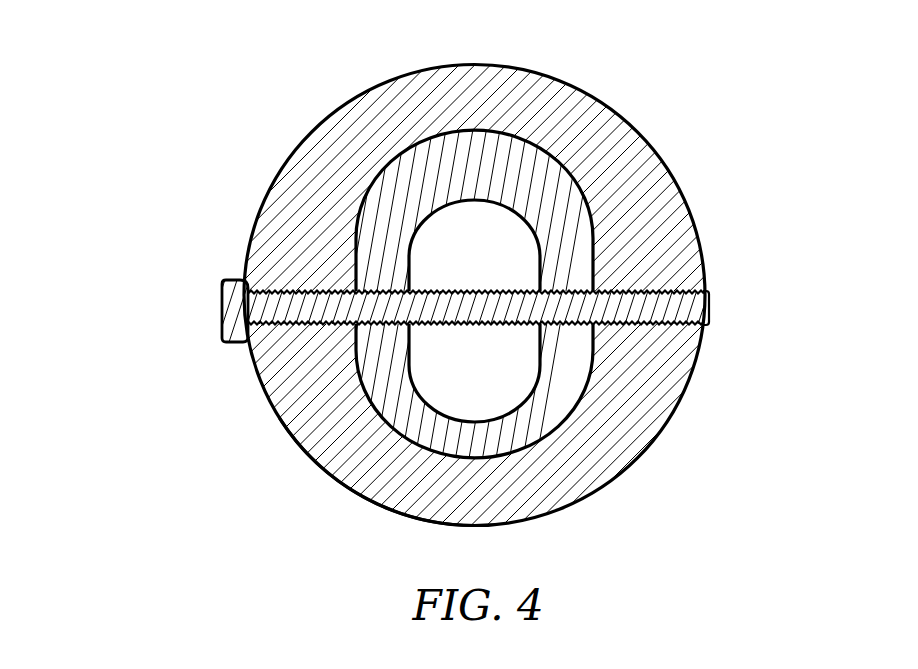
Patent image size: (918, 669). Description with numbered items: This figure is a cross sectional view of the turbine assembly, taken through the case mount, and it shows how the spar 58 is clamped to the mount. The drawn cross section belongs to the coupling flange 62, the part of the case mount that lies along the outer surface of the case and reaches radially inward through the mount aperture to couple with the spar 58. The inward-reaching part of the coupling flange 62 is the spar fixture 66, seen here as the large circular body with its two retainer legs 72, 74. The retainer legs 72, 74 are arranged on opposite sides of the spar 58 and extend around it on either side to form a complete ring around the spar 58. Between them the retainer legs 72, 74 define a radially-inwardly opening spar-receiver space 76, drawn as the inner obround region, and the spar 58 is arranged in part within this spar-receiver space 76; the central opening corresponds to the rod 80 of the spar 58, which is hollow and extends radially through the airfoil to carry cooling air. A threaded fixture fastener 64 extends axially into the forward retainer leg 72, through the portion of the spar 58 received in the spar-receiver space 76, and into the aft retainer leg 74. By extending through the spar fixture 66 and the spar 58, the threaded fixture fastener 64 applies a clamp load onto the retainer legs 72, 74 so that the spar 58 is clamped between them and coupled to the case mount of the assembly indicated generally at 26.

The coupling assembly 26 is at (130, 88).
The coupling flange 62 is at (166, 185).
The spar 58 is at (646, 263).
The spar fixture 66 is at (311, 128).
The spar-receiver space 76 is at (592, 228).
The rod 80 is at (594, 340).
The forward retainer leg 72 is at (704, 276).
The threaded fixture fastener 64 is at (222, 311).
The aft retainer leg 74 is at (279, 418).